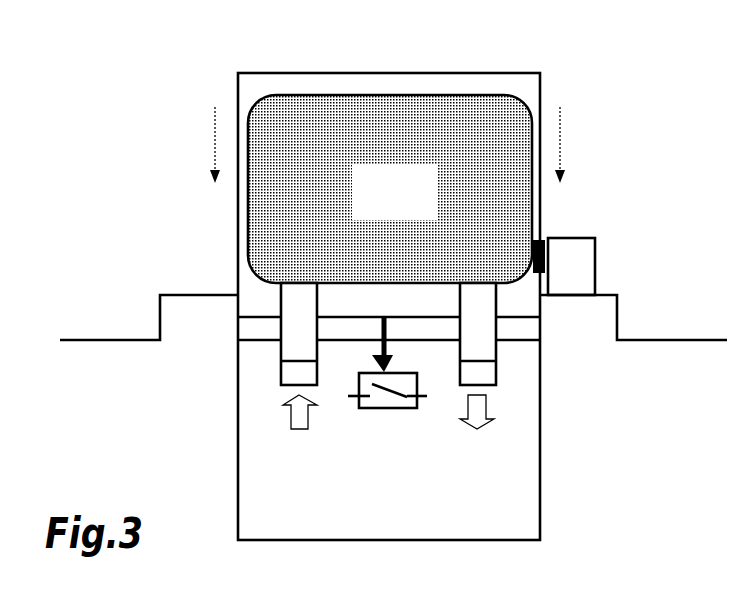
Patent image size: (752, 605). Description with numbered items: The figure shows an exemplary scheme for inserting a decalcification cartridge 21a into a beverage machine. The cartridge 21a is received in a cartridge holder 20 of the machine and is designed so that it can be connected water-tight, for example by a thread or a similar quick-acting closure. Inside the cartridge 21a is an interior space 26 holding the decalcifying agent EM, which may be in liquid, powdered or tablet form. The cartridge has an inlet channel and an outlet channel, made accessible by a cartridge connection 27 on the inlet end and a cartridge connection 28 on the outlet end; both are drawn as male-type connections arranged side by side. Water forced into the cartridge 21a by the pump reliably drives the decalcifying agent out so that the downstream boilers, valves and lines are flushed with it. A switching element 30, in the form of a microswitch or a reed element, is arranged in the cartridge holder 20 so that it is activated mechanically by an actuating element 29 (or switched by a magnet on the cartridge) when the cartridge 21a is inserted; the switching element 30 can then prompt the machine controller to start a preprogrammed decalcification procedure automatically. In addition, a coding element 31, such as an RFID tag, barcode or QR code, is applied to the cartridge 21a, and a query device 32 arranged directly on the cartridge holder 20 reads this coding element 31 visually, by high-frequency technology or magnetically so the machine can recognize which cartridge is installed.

The cartridge holder 20 is at (141, 290).
The decalcification cartridge 21a is at (540, 83).
The interior space 26 is at (315, 95).
The cartridge connection on the inlet end 27 is at (293, 350).
The cartridge connection on the outlet end 28 is at (482, 350).
The actuating element 29 is at (380, 328).
The switching element 30 is at (393, 408).
The coding element 31 is at (553, 240).
The query device 32 is at (582, 273).